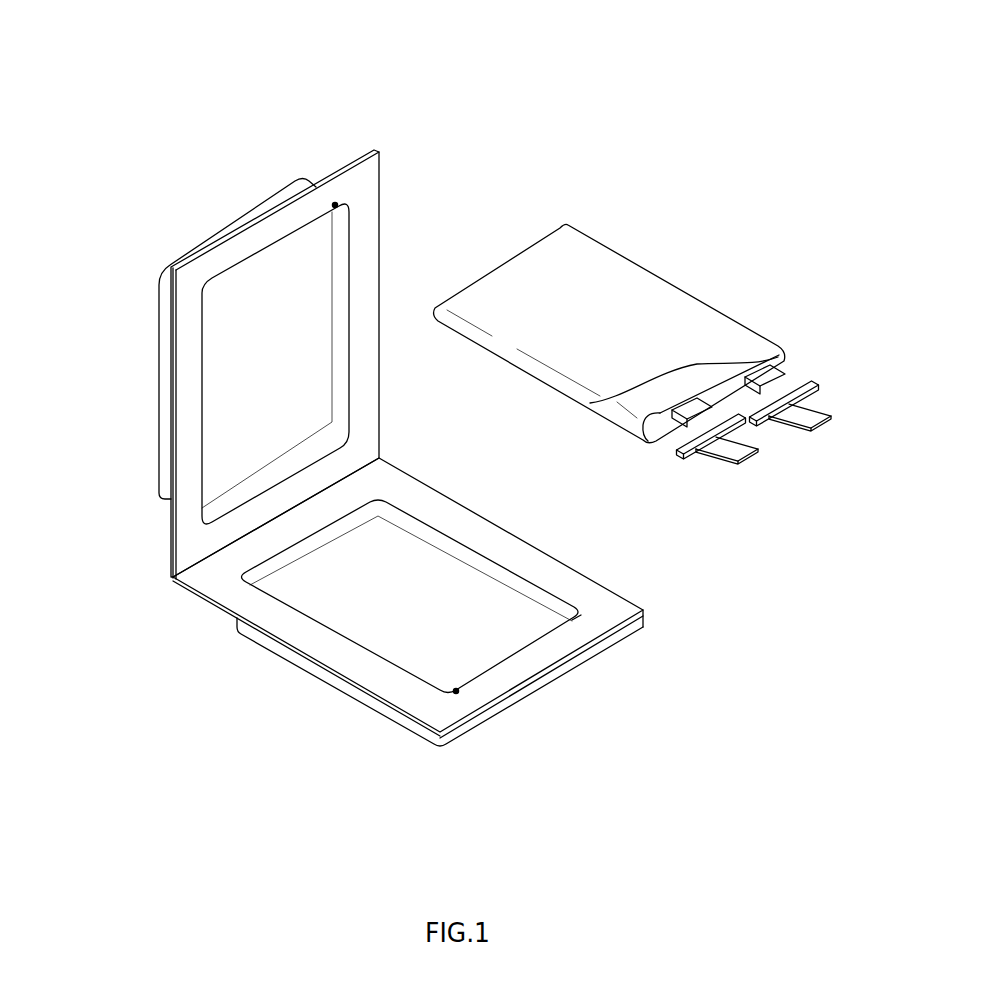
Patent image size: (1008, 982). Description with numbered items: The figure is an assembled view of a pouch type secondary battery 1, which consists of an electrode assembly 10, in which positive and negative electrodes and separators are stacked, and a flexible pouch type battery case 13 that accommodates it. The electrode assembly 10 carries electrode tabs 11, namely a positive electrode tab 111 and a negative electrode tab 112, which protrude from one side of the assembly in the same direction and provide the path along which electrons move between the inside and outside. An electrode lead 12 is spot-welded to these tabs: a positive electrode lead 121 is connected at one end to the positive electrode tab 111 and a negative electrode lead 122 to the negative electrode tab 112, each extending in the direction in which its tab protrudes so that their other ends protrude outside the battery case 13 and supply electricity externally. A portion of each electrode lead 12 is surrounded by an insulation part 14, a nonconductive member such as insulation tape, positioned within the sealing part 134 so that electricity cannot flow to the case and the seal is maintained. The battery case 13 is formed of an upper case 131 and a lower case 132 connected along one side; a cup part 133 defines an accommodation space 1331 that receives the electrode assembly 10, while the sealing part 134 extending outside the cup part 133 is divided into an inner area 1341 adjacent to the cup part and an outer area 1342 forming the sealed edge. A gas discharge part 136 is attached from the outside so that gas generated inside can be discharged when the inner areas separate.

The pouch type secondary battery 1 is at (530, 80).
The electrode assembly 10 is at (764, 243).
The electrode tabs 11 is at (542, 447).
The positive electrode tab 111 is at (590, 403).
The negative electrode tab 112 is at (643, 420).
The electrode lead 12 is at (872, 463).
The positive electrode lead 121 is at (813, 417).
The negative electrode lead 122 is at (745, 452).
The insulation part 14 is at (812, 388).
The battery case 13 is at (92, 294).
The upper case 131 is at (160, 305).
The lower case 132 is at (217, 595).
The cup part 133 is at (332, 687).
The sealing part 134 is at (724, 586).
The inner area 1341 is at (590, 613).
The outer area 1342 is at (613, 620).
The accommodation space 1331 is at (467, 662).
The gas discharge part 136 is at (338, 204).